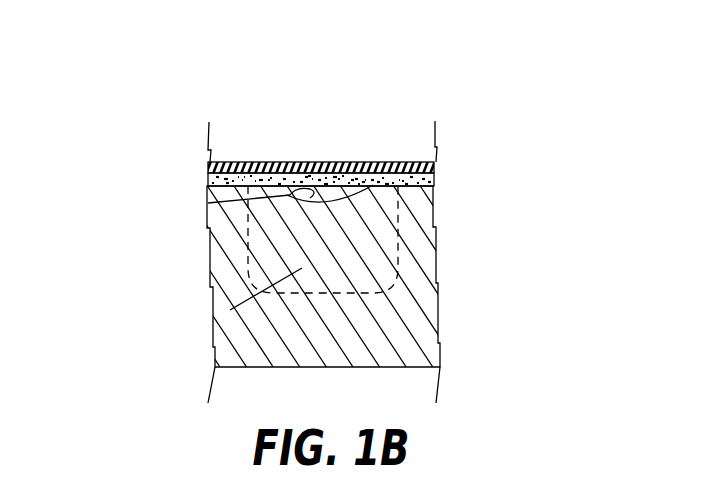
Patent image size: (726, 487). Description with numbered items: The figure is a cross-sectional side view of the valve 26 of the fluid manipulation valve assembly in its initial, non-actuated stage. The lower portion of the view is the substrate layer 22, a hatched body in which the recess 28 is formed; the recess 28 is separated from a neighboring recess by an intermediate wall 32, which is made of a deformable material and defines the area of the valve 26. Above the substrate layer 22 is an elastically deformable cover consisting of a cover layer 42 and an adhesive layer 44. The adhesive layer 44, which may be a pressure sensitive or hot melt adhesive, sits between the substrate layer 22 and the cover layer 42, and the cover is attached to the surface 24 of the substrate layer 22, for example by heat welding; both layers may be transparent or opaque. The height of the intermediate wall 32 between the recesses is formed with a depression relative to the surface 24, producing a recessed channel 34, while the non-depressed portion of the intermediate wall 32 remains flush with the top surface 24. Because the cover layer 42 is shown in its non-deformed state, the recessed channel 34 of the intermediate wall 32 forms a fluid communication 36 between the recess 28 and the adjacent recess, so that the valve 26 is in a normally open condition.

The valve 26 is at (218, 103).
The cover layer 42 is at (435, 166).
The adhesive layer 44 is at (435, 179).
The surface 24 is at (316, 276).
The substrate layer 22 is at (395, 312).
The fluid communication 36 is at (338, 187).
The recessed channel 34 is at (208, 203).
The recess 28 is at (248, 257).
The intermediate wall 32 is at (230, 310).